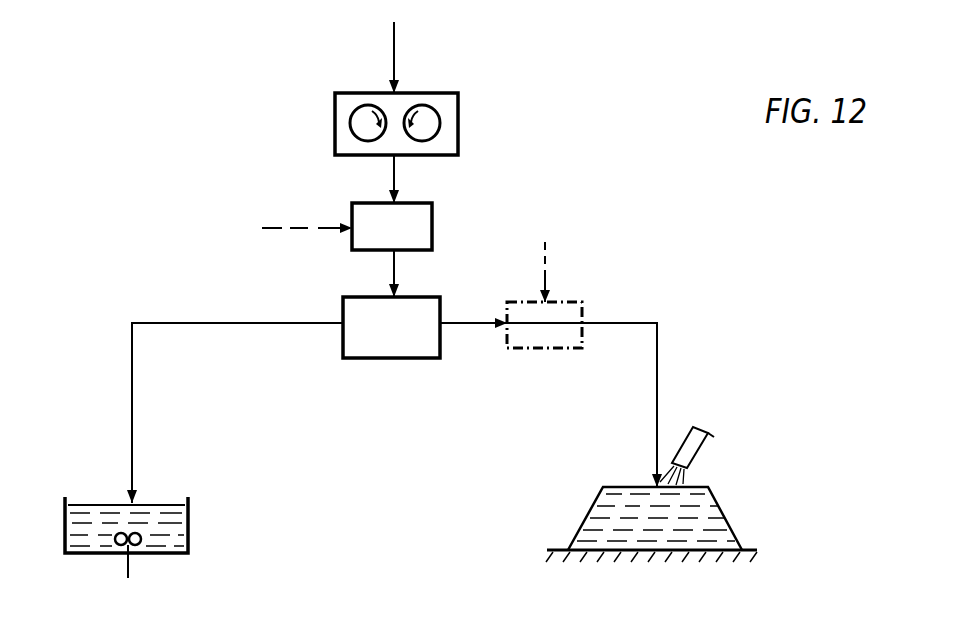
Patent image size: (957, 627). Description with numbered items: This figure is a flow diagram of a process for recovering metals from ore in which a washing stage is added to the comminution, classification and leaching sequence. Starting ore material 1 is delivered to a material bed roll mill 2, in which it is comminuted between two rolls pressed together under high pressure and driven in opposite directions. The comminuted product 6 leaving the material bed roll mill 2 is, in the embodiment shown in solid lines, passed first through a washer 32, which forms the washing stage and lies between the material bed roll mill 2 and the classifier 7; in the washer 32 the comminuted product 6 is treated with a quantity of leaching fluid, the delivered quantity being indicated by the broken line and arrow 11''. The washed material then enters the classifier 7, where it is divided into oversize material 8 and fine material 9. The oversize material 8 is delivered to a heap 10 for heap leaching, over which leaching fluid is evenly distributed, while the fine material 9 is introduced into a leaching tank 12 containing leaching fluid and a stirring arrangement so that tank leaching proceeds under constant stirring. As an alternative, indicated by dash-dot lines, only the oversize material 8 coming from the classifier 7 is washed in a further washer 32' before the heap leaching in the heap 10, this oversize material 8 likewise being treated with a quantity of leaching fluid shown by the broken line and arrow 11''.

The starting ore material 1 is at (395, 35).
The material bed roll mill 2 is at (460, 117).
The washer 32 is at (429, 202).
The comminuted product 6 is at (307, 200).
The delivered quantity of leaching fluid 11'' is at (449, 241).
The classifier 7 is at (441, 306).
The fine material 9 is at (133, 393).
The oversize material 8 is at (656, 390).
The washer 32' is at (581, 310).
The heap 10 is at (722, 512).
The leaching tank 12 is at (190, 527).